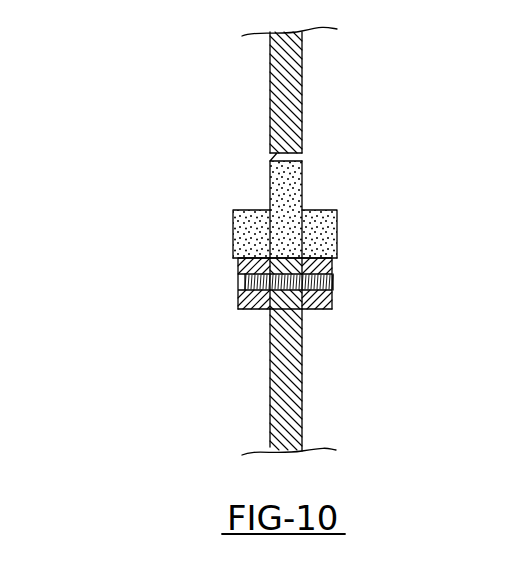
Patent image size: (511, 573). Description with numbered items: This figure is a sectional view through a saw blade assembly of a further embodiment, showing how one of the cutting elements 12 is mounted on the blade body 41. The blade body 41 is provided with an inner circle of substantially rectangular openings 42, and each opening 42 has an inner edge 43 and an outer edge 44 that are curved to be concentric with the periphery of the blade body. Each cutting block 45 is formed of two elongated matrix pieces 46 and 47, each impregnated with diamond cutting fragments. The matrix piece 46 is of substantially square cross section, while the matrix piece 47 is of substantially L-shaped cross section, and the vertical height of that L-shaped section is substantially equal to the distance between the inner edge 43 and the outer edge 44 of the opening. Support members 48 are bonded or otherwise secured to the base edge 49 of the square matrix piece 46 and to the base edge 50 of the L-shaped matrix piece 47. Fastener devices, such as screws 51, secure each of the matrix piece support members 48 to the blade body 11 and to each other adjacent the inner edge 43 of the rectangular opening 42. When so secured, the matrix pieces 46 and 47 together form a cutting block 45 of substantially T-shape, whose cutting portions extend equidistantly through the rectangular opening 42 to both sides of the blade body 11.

The blade body 11 is at (310, 187).
The cutting elements 12 is at (233, 208).
The blade body 41 is at (300, 413).
The rectangular openings 42 is at (302, 157).
The inner edge 43 is at (292, 258).
The outer edge 44 is at (300, 156).
The cutting block 45 is at (340, 205).
The matrix piece 46 is at (240, 229).
The matrix piece 47 is at (325, 228).
The support members 48 is at (238, 307).
The base edge 49 is at (243, 273).
The base edge 50 is at (334, 268).
The screws 51 is at (313, 302).